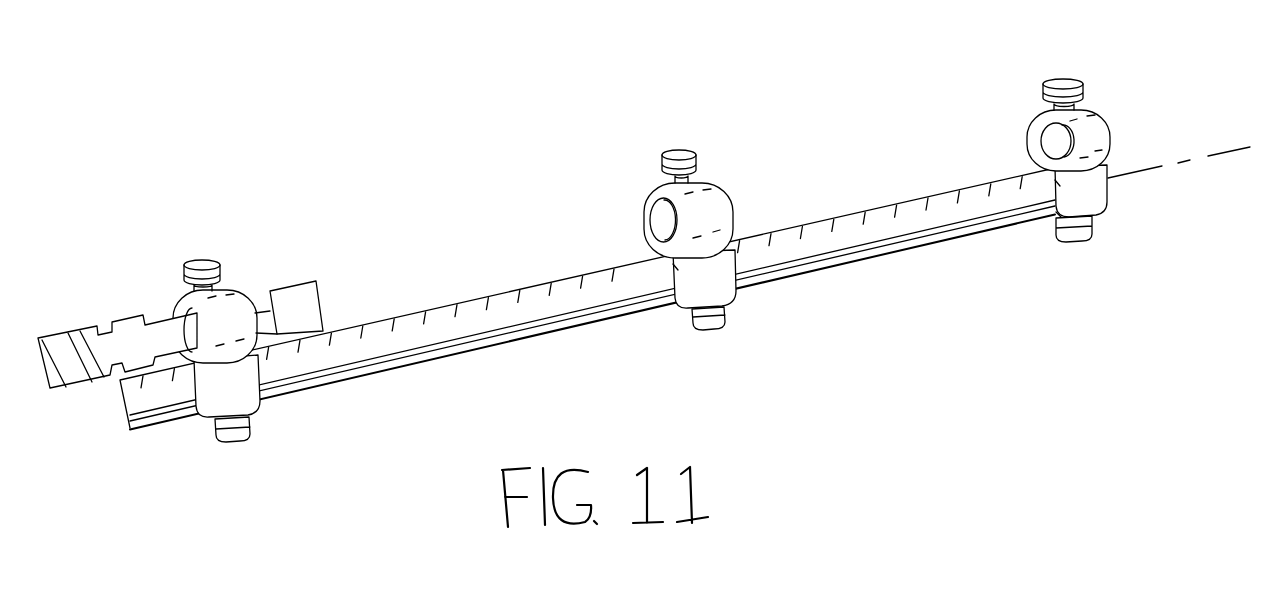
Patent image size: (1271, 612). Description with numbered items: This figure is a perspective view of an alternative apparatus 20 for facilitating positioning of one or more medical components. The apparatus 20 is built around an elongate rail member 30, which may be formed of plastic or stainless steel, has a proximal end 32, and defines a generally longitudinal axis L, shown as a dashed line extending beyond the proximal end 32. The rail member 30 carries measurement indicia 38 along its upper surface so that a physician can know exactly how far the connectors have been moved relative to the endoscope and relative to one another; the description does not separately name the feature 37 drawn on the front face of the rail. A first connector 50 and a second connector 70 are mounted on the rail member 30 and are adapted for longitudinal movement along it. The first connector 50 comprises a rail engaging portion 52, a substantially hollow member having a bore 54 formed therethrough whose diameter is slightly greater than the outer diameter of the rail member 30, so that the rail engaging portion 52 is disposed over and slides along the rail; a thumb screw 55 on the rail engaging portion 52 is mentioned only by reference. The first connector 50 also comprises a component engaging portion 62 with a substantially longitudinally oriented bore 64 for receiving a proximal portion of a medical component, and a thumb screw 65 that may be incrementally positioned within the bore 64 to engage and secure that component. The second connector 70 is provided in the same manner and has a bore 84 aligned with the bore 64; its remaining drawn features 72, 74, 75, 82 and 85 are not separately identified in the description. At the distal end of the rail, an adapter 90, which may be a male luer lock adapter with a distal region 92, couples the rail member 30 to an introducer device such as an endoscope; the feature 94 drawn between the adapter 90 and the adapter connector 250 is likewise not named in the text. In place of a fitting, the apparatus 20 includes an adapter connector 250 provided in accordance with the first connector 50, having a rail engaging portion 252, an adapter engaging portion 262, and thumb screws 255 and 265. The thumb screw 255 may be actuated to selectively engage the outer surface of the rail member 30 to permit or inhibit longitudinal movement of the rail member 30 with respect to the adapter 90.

The apparatus 20 is at (406, 220).
The rail member 30 is at (587, 299).
The proximal end 32 is at (1050, 248).
The groove 37 is at (537, 327).
The measurement indicia 38 is at (338, 331).
The first connector 50 is at (684, 239).
The rail engaging portion 52 is at (725, 290).
The bore 54 is at (673, 308).
The thumb screw 55 is at (708, 330).
The component engaging portion 62 is at (700, 183).
The bore 64 is at (660, 225).
The thumb screw 65 is at (680, 151).
The second connector 70 is at (1055, 184).
The lower jaw 72 is at (1092, 203).
The foot 74 is at (1040, 222).
The knob 75 is at (1077, 242).
The clamp body 82 is at (1083, 113).
The bore 84 is at (1046, 142).
The thumbscrew 85 is at (1063, 82).
The adapter 90 is at (72, 351).
The distal region 92 is at (62, 389).
The shaft 94 is at (160, 318).
The adapter connector 250 is at (180, 334).
The rail engaging portion 252 is at (257, 407).
The thumb screw 255 is at (235, 440).
The adapter engaging portion 262 is at (230, 292).
The thumb screw 265 is at (202, 261).
The longitudinal axis L is at (1218, 163).